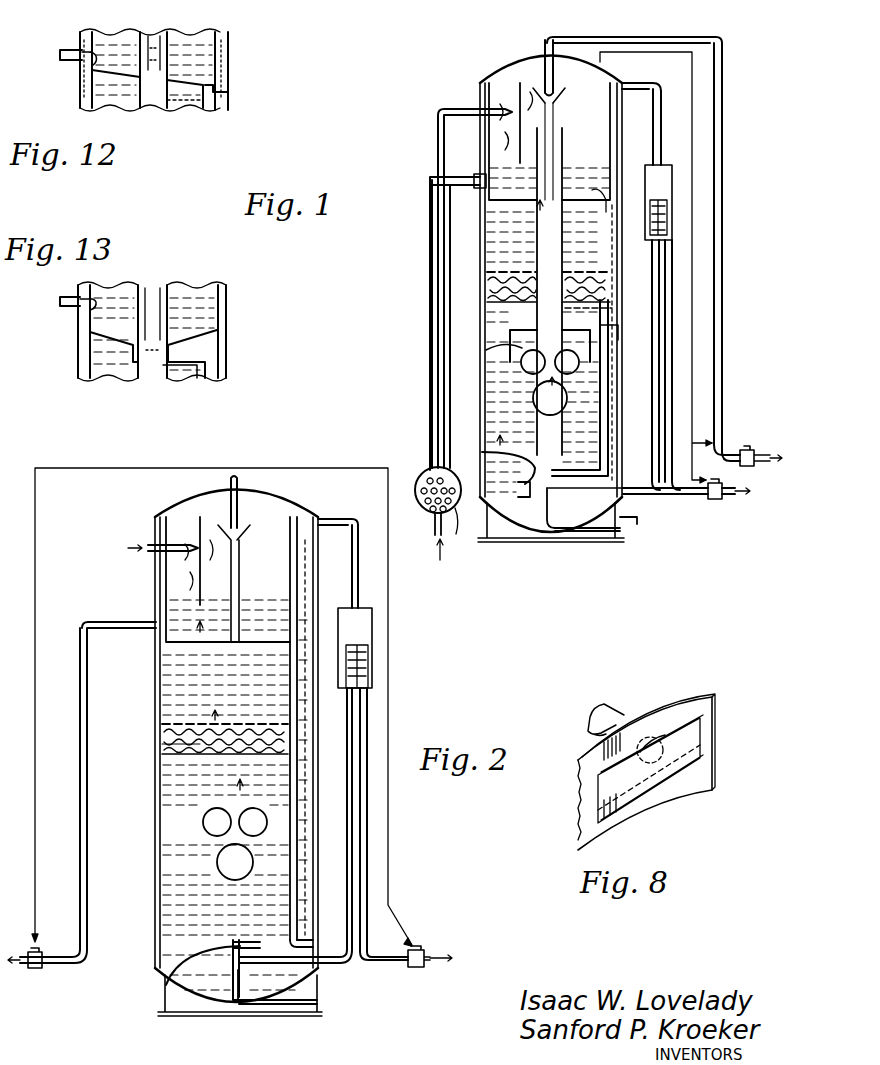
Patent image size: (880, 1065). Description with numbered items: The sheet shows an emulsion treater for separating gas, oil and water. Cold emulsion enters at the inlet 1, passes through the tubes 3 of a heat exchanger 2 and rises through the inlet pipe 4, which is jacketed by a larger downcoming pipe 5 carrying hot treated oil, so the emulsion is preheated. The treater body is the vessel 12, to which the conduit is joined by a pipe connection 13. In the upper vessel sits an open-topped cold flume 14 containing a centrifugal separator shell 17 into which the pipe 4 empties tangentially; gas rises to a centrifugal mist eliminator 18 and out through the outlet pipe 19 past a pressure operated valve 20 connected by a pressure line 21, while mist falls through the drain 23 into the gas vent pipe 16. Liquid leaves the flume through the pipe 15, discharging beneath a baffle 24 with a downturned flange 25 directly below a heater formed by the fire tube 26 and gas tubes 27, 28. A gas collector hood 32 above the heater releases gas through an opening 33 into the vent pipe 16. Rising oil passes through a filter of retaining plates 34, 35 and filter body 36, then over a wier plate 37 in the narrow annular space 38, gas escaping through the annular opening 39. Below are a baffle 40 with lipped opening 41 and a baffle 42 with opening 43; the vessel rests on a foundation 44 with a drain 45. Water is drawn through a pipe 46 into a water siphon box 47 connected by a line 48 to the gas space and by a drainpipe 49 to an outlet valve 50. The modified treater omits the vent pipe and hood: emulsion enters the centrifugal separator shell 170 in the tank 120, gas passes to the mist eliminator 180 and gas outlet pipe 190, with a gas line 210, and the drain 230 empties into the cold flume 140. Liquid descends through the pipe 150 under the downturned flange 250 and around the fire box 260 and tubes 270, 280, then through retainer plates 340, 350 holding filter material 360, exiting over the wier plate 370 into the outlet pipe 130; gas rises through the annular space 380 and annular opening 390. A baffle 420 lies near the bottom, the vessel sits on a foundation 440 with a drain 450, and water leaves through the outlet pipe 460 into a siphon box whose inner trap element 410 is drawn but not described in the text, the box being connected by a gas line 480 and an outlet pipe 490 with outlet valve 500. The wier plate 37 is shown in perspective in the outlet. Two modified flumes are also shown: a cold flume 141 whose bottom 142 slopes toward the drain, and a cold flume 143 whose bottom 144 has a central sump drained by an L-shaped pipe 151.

In FIG. 1, the inlet for cold emulsion 1 is at (430, 530).
In FIG. 1, the heat exchanger 2 is at (420, 480).
In FIG. 1, the tubes 3 is at (461, 527).
In FIG. 1, the inlet pipe 4 is at (432, 330).
In FIG. 1, the downcoming pipe 5 is at (432, 366).
In FIG. 12, the vessel 12 is at (228, 78).
In FIG. 13, the vessel 12 is at (226, 302).
In FIG. 1, the vessel 12 is at (482, 262).
In FIG. 8, the vessel 12 is at (696, 696).
In FIG. 12, the pipe connection 13 is at (72, 50).
In FIG. 13, the pipe connection 13 is at (72, 306).
In FIG. 1, the pipe connection 13 is at (462, 186).
In FIG. 8, the pipe connection 13 is at (608, 708).
In FIG. 1, the cold flume 14 is at (616, 128).
In FIG. 12, the pipe 15 is at (215, 100).
In FIG. 1, the pipe 15 is at (620, 336).
In FIG. 12, the gas vent pipe 16 is at (168, 100).
In FIG. 13, the gas vent pipe 16 is at (163, 290).
In FIG. 1, the gas vent pipe 16 is at (580, 222).
In FIG. 1, the centrifugal separator shell 17 is at (516, 70).
In FIG. 1, the centrifugal mist eliminator 18 is at (560, 80).
In FIG. 1, the outlet pipe 19 is at (640, 37).
In FIG. 1, the pressure operated valve 20 is at (748, 448).
In FIG. 1, the pressure line 21 is at (722, 150).
In FIG. 12, the drain 23 is at (162, 40).
In FIG. 13, the drain 23 is at (142, 290).
In FIG. 1, the drain 23 is at (565, 120).
In FIG. 1, the baffle 24 is at (590, 470).
In FIG. 1, the downturned flange 25 is at (590, 532).
In FIG. 1, the fire tube 26 is at (568, 398).
In FIG. 1, the heated gas tube 27 is at (580, 362).
In FIG. 1, the heated gas tube 28 is at (520, 372).
In FIG. 1, the gas collector hood 32 is at (486, 350).
In FIG. 1, the opening 33 is at (508, 332).
In FIG. 1, the retaining plate 34 is at (612, 310).
In FIG. 1, the retaining plate 35 is at (605, 262).
In FIG. 1, the filter body 36 is at (612, 286).
In FIG. 12, the wier plate 37 is at (90, 66).
In FIG. 13, the wier plate 37 is at (88, 328).
In FIG. 1, the wier plate 37 is at (476, 174).
In FIG. 8, the wier plate 37 is at (688, 746).
In FIG. 1, the annular space 38 is at (624, 148).
In FIG. 1, the annular opening 39 is at (628, 82).
In FIG. 1, the baffle 40 is at (524, 500).
In FIG. 1, the opening 41 is at (482, 455).
In FIG. 1, the baffle 42 is at (580, 512).
In FIG. 1, the opening 43 is at (547, 525).
In FIG. 1, the foundation 44 is at (620, 524).
In FIG. 1, the drain 45 is at (615, 542).
In FIG. 1, the pipe 46 is at (640, 496).
In FIG. 1, the water siphon box 47 is at (672, 205).
In FIG. 1, the line 48 is at (662, 120).
In FIG. 1, the drainpipe 49 is at (672, 340).
In FIG. 1, the outlet valve 50 is at (720, 500).
In FIG. 2, the tank 120 is at (162, 746).
In FIG. 2, the outlet pipe 130 is at (90, 857).
In FIG. 2, the cold flume 140 is at (304, 562).
In FIG. 12, the cold flume 141 is at (228, 60).
In FIG. 12, the bottom 142 is at (125, 85).
In FIG. 13, the cold flume 143 is at (226, 326).
In FIG. 13, the bottom 144 is at (212, 345).
In FIG. 2, the pipe 150 is at (300, 800).
In FIG. 13, the L-shaped pipe 151 is at (210, 370).
In FIG. 2, the centrifugal separator shell 170 is at (196, 510).
In FIG. 2, the centrifugal mist eliminator 180 is at (255, 490).
In FIG. 2, the gas outlet pipe 190 is at (236, 476).
In FIG. 2, the gas line 210 is at (372, 645).
In FIG. 2, the drain 230 is at (245, 545).
In FIG. 2, the downturned flange 250 is at (166, 978).
In FIG. 2, the fire box 260 is at (220, 870).
In FIG. 2, the tube 270 is at (205, 812).
In FIG. 2, the tube 280 is at (205, 824).
In FIG. 2, the retainer plate 340 is at (162, 756).
In FIG. 2, the retainer plate 350 is at (185, 724).
In FIG. 2, the filter material 360 is at (170, 735).
In FIG. 2, the wier plate 370 is at (152, 622).
In FIG. 2, the annular space 380 is at (310, 582).
In FIG. 2, the annular opening 390 is at (320, 518).
In FIG. 2, the trap 410 is at (370, 664).
In FIG. 2, the baffle 420 is at (225, 1000).
In FIG. 2, the foundation 440 is at (322, 990).
In FIG. 2, the drain 450 is at (290, 1016).
In FIG. 2, the outlet pipe 460 is at (355, 892).
In FIG. 2, the gas line 480 is at (360, 570).
In FIG. 2, the outlet pipe 490 is at (368, 838).
In FIG. 2, the outlet valve 500 is at (420, 968).